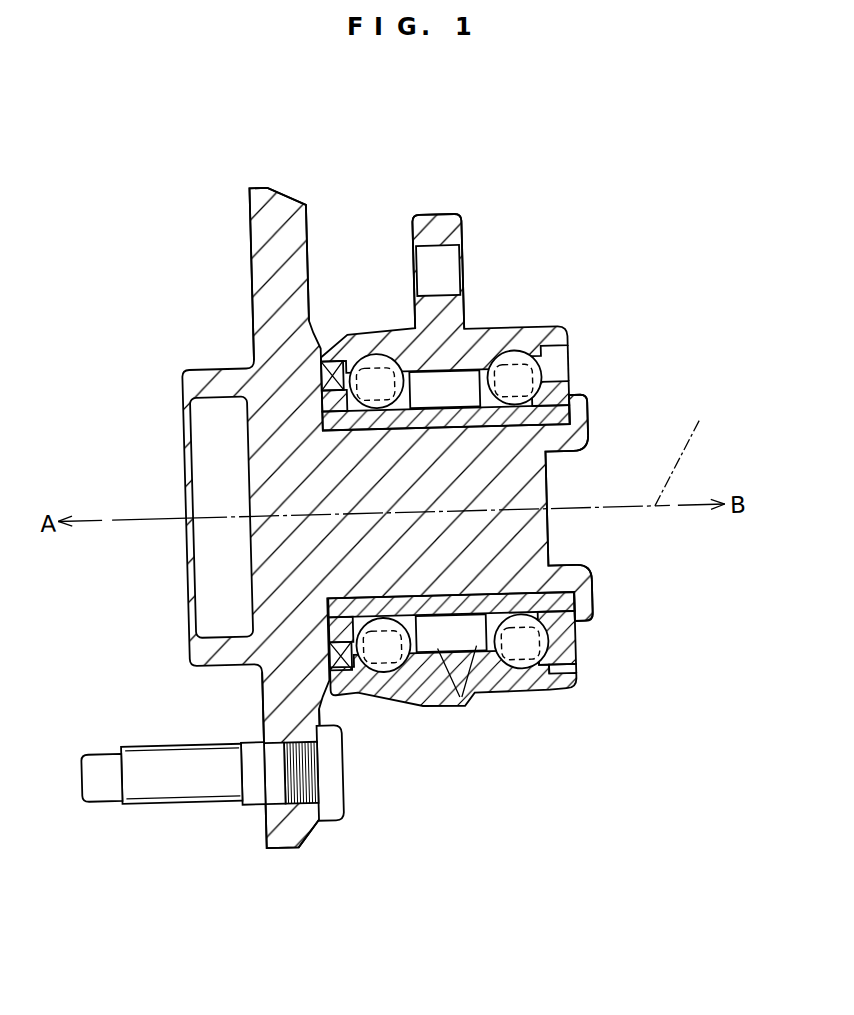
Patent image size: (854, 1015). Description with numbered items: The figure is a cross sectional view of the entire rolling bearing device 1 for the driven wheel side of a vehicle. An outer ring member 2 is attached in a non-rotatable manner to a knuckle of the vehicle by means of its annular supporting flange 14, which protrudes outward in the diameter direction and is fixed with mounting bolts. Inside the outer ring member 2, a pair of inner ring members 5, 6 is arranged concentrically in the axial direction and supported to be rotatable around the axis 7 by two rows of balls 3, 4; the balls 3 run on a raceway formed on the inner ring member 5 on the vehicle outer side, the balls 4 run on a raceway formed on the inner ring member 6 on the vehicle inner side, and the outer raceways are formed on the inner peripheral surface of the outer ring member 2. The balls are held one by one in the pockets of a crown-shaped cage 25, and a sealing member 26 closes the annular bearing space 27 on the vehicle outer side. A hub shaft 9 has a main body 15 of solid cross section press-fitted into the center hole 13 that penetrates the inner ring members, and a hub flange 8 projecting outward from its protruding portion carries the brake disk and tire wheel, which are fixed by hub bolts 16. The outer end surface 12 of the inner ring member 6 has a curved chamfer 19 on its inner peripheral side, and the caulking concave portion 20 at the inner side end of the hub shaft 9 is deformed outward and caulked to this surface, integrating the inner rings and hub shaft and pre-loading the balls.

The rolling bearing device 1 is at (520, 255).
The outer ring member 2 is at (425, 704).
The balls 3 is at (389, 356).
The balls 4 is at (524, 356).
The inner ring member 5 is at (313, 394).
The inner ring member 6 is at (573, 414).
The axis 7 is at (679, 450).
The hub flange 8 is at (291, 193).
The hub shaft 9 is at (594, 577).
The outer end surface 12 is at (557, 637).
The center hole 13 is at (479, 428).
The supporting flange 14 is at (445, 213).
The main body 15 is at (517, 620).
The hub bolts 16 is at (175, 784).
The curved chamfer 19 is at (563, 601).
The caulking concave portion 20 is at (473, 531).
The crown-shaped cage 25 is at (457, 698).
The sealing member 26 is at (337, 355).
The annular bearing space 27 is at (450, 391).